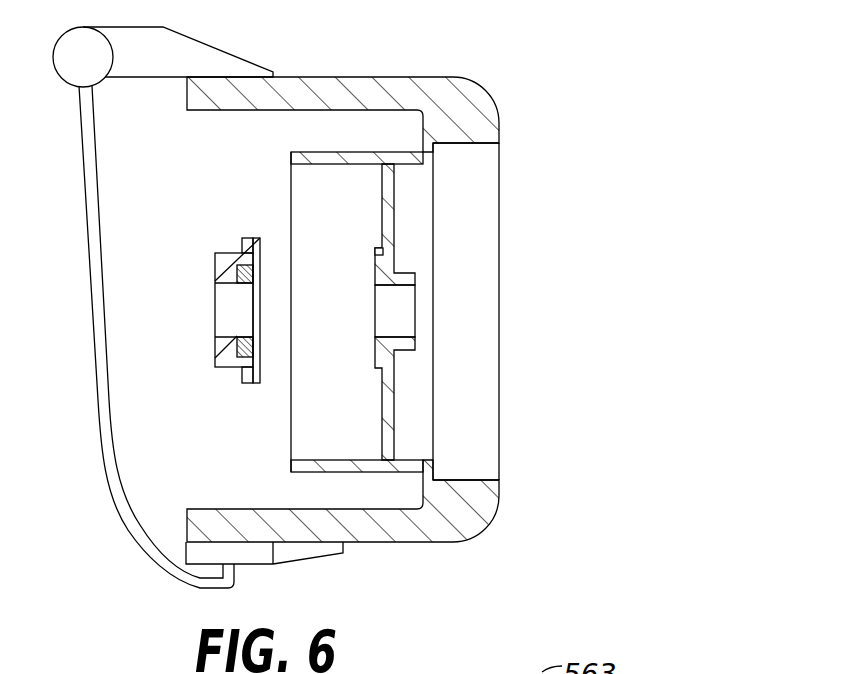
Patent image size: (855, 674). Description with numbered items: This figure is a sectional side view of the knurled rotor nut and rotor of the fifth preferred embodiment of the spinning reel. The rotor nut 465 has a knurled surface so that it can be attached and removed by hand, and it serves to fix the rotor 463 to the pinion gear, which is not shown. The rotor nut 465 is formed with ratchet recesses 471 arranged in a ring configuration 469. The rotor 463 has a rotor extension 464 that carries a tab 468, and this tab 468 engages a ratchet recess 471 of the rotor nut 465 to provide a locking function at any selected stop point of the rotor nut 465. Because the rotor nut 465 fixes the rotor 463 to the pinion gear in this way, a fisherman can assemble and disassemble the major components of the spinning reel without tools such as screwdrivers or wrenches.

The rotor 463 is at (503, 50).
The rotor extension 464 is at (378, 370).
The rotor nut 465 is at (234, 278).
The tab 468 is at (380, 253).
The ring configuration 469 is at (252, 237).
The ratchet recesses 471 is at (255, 252).